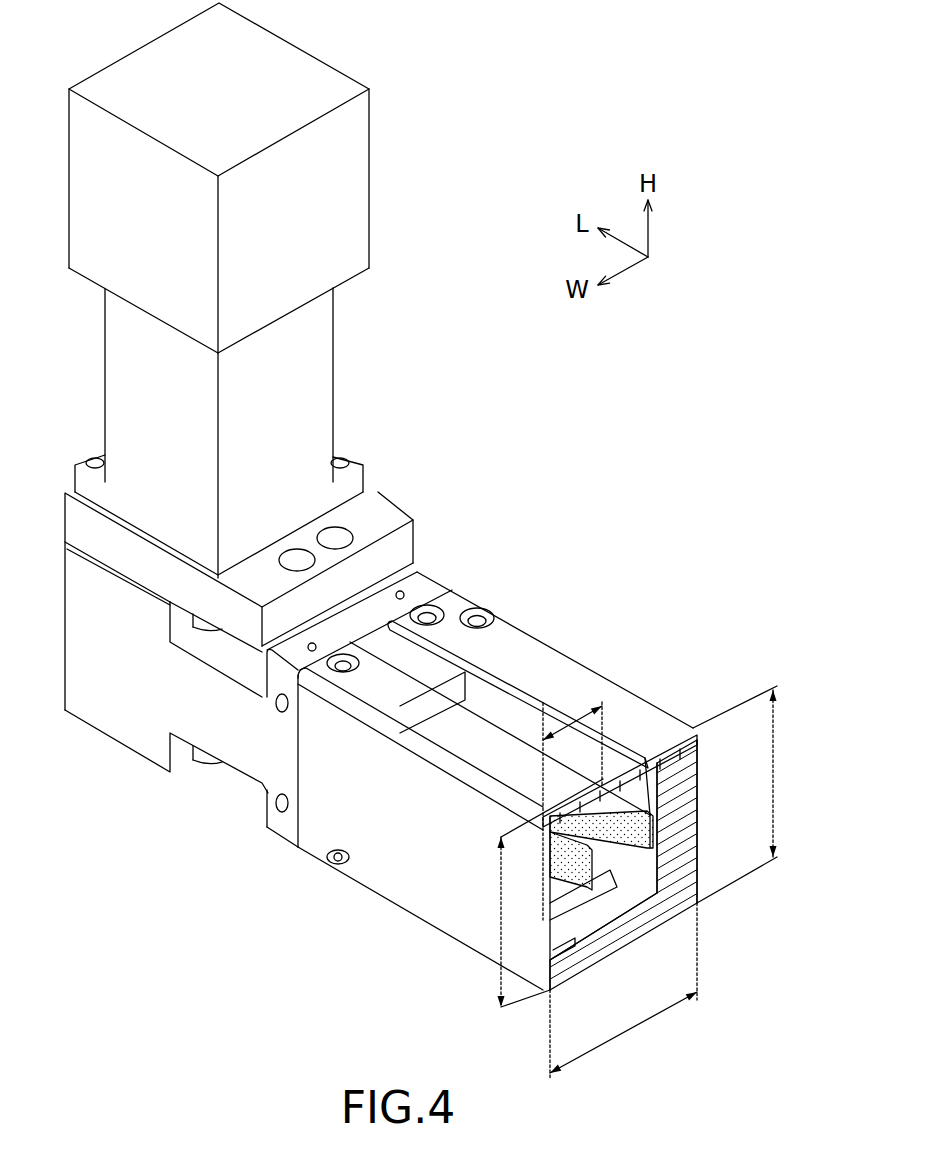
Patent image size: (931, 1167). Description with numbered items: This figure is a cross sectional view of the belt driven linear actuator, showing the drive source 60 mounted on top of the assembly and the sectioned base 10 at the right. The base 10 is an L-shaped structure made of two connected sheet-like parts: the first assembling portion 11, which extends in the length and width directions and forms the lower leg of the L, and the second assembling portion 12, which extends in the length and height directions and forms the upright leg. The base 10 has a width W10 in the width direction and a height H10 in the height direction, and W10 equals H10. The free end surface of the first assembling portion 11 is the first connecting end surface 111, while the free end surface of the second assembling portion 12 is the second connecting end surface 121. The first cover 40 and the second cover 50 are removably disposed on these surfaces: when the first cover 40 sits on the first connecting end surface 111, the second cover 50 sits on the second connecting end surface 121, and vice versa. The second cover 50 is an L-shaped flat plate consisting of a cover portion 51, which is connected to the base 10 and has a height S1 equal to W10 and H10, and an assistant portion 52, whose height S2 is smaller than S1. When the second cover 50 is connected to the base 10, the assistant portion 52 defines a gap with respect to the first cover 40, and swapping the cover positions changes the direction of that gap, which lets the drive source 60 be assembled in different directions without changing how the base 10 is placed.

The base 10 is at (654, 875).
The first assembling portion 11 is at (610, 943).
The first connecting end surface 111 is at (553, 963).
The second assembling portion 12 is at (694, 823).
The second connecting end surface 121 is at (686, 758).
The first cover 40 is at (523, 633).
The second cover 50 is at (400, 781).
The cover portion 51 is at (420, 822).
The assistant portion 52 is at (393, 693).
The drive source 60 is at (337, 62).
The height of cover portion S1 is at (505, 927).
The height of assistant portion S2 is at (577, 717).
The height of base H10 is at (773, 824).
The width of base W10 is at (623, 1033).